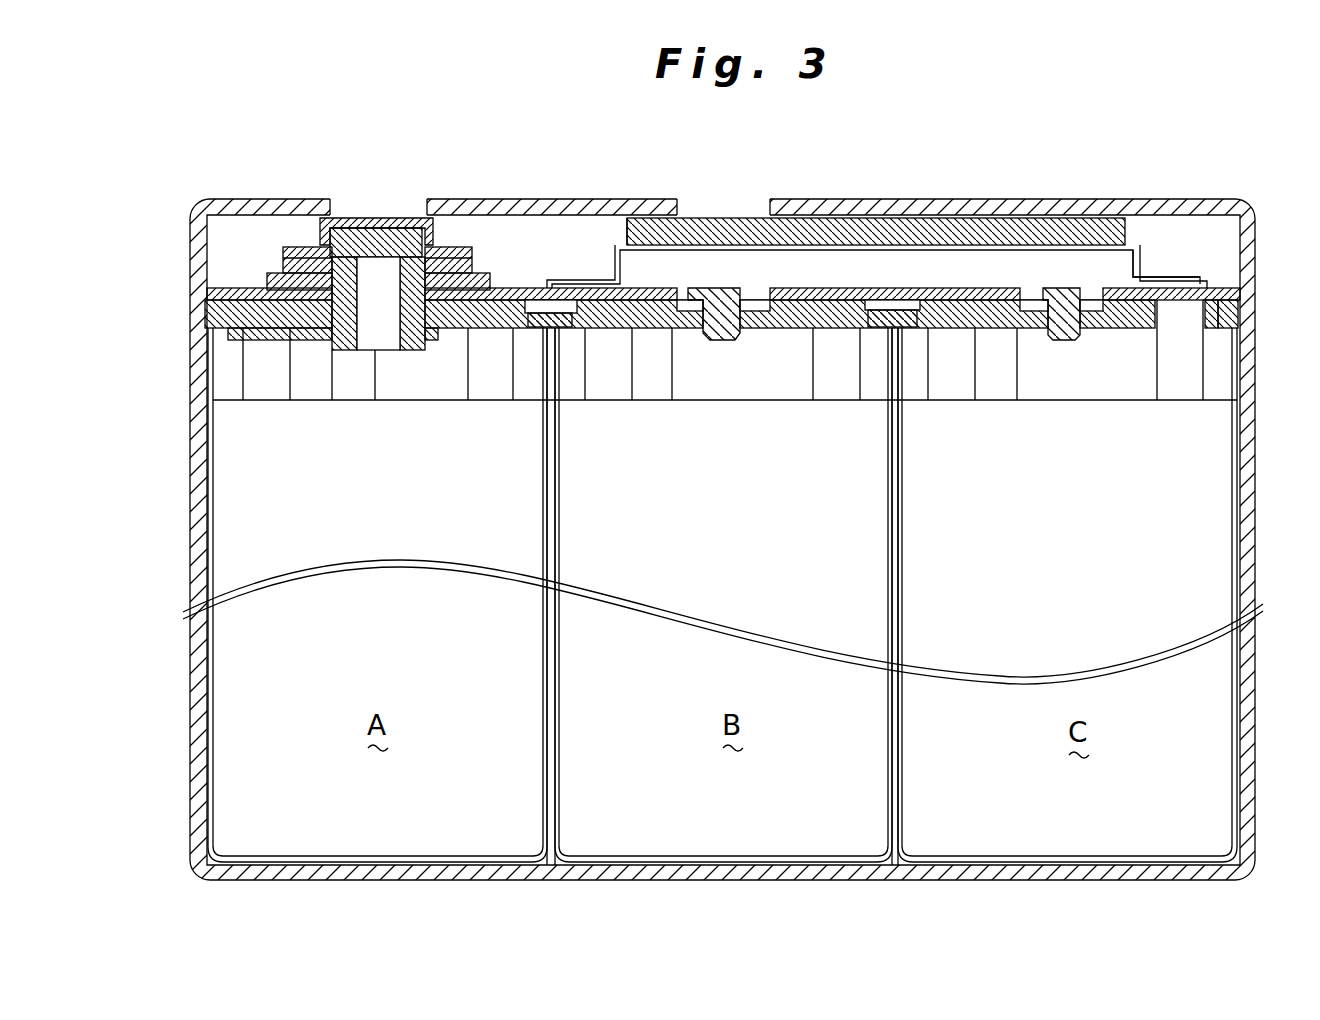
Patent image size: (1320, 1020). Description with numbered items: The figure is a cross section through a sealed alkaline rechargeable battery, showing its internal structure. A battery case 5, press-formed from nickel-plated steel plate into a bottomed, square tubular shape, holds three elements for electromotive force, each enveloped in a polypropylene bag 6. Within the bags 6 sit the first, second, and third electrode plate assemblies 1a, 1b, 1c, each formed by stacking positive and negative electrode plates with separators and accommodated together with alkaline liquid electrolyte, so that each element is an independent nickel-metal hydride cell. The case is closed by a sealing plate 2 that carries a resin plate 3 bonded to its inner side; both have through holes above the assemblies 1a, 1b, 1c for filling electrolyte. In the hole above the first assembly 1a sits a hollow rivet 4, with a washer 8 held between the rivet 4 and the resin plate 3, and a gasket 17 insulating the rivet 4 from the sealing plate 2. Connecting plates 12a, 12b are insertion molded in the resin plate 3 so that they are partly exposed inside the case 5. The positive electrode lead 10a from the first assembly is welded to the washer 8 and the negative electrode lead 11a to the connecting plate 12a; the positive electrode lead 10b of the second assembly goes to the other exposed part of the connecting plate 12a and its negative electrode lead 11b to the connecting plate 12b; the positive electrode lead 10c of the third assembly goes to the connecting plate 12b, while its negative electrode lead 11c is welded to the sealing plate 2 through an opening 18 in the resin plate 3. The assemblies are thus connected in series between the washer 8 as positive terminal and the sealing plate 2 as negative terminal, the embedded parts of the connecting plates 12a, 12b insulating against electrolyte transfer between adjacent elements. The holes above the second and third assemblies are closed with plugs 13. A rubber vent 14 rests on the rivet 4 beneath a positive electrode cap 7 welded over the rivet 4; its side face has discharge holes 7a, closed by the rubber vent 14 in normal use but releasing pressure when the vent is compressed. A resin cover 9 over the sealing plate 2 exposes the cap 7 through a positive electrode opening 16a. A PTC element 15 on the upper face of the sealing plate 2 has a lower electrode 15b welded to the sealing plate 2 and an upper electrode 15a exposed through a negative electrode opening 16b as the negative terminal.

The first electrode plate assembly 1a is at (437, 395).
The second electrode plate assembly 1b is at (780, 395).
The third electrode plate assembly 1c is at (1125, 398).
The sealing plate 2 is at (235, 286).
The resin plate 3 is at (225, 318).
The hollow rivet 4 is at (355, 340).
The battery case 5 is at (1257, 397).
The bag 6 is at (213, 648).
The positive electrode cap 7 is at (478, 258).
The discharge holes 7a is at (452, 245).
The washer 8 is at (306, 338).
The resin cover 9 is at (1132, 200).
The positive electrode lead 10a is at (290, 384).
The positive electrode lead 10b is at (628, 382).
The positive electrode lead 10c is at (970, 380).
The negative electrode lead 11a is at (515, 384).
The negative electrode lead 11b is at (860, 384).
The negative electrode lead 11c is at (1205, 382).
The connecting plate 12a is at (668, 340).
The connecting plate 12b is at (1017, 340).
The plug 13 is at (720, 340).
The rubber vent 14 is at (362, 226).
The PTC element 15 is at (968, 240).
The upper electrode 15a is at (883, 235).
The lower electrode 15b is at (1035, 256).
The positive electrode opening 16a is at (418, 215).
The negative electrode opening 16b is at (765, 222).
The gasket 17 is at (275, 276).
The opening 18 is at (1232, 313).